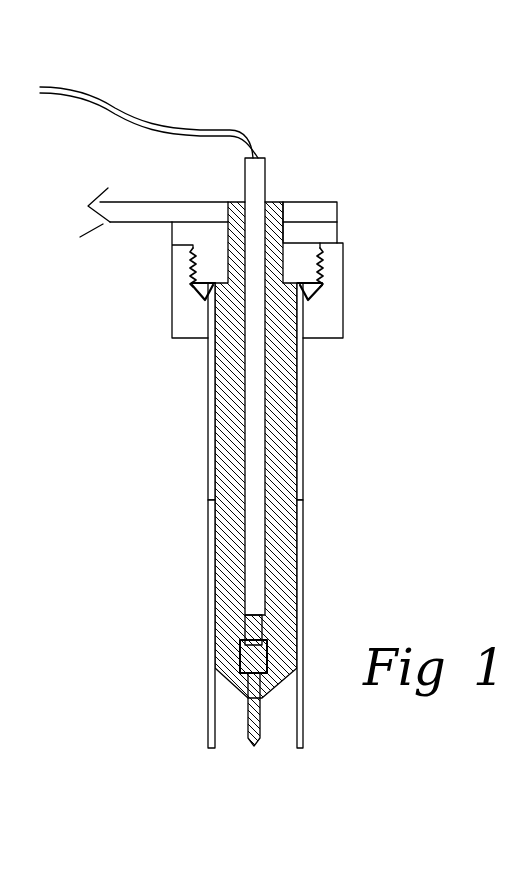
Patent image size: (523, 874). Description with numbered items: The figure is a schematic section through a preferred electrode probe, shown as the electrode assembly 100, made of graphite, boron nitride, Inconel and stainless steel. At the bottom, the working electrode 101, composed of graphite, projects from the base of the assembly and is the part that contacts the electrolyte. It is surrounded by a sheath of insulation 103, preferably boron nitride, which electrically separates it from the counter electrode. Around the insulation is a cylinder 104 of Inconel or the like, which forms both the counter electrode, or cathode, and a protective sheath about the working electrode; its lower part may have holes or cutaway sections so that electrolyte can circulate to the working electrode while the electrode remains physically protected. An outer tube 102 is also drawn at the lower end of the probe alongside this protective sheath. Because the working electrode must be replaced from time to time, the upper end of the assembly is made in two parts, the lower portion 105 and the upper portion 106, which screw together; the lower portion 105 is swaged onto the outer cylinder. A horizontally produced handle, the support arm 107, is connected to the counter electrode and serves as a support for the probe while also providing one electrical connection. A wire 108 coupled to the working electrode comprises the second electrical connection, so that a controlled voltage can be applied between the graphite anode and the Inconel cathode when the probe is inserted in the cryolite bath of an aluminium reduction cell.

The electrode assembly 100 is at (353, 115).
The working electrode 101 is at (262, 745).
The outer tube lower portion 102 is at (208, 730).
The sheath of insulation 103 is at (281, 193).
The cylinder 104 is at (208, 500).
The lower portion 105 is at (172, 338).
The upper end portion 106 is at (340, 243).
The support arm 107 is at (147, 201).
The wire 108 is at (149, 122).